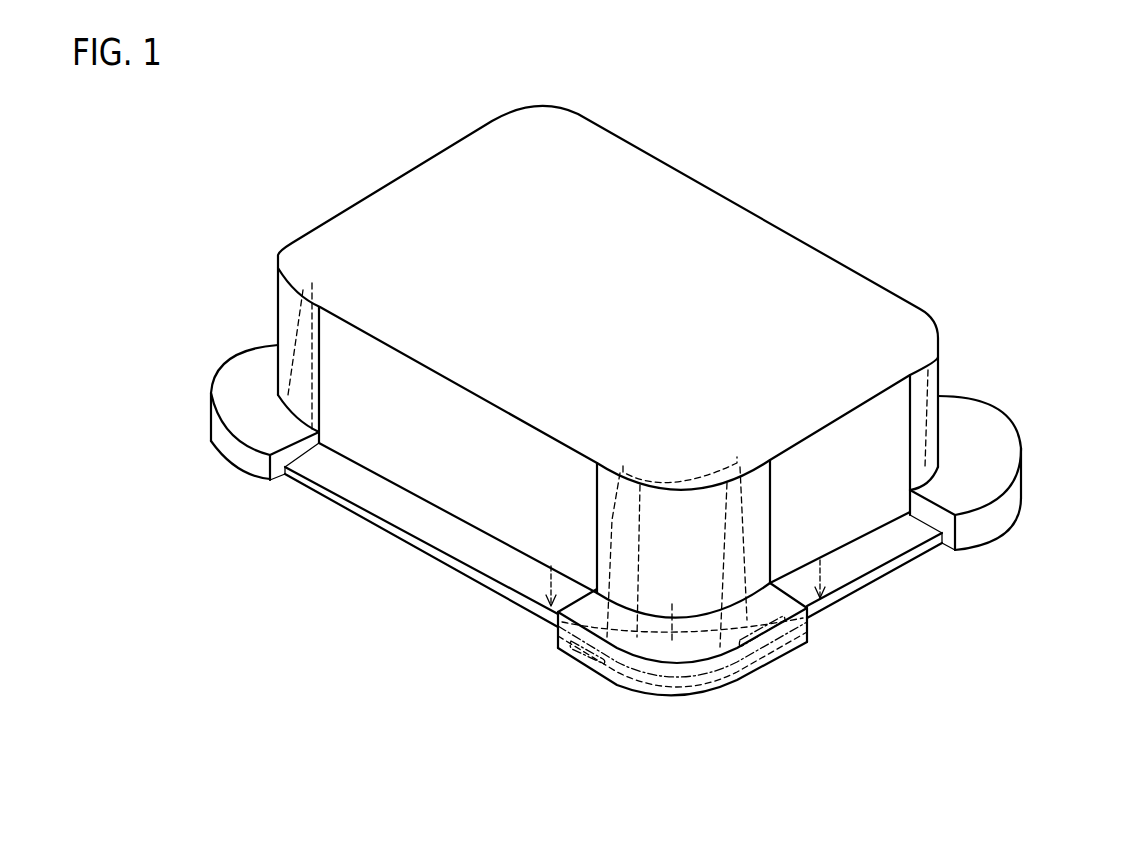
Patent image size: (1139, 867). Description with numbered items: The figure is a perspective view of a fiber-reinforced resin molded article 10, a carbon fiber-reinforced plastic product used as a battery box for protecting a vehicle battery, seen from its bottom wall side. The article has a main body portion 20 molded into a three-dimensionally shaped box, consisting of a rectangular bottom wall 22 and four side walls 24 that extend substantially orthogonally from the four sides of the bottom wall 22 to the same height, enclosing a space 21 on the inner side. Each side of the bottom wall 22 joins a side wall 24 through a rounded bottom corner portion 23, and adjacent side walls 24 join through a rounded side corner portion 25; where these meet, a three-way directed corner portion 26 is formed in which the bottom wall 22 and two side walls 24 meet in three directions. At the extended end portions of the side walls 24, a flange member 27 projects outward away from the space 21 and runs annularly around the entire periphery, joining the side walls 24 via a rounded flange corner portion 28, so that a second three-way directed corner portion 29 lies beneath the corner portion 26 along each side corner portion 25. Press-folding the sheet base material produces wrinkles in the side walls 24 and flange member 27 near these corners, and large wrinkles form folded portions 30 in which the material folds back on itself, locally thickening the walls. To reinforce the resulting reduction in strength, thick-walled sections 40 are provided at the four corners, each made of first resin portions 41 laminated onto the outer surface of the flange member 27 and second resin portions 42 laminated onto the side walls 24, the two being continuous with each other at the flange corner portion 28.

The fiber-reinforced resin molded article 10 is at (250, 128).
The main body portion 20 is at (706, 174).
The space 21 is at (710, 248).
The bottom wall 22 is at (633, 190).
The bottom corner portion 23 is at (808, 246).
The side wall 24 is at (437, 490).
The side corner portion 25 is at (278, 310).
The three-way directed corner portion 26 is at (283, 247).
The flange member 27 is at (318, 487).
The flange corner portion 28 is at (505, 553).
The three-way directed corner portion 29 is at (672, 640).
The folded portion 30 is at (322, 333).
The thick-walled section 40 is at (225, 466).
The first resin portion 41 is at (610, 660).
The second resin portion 42 is at (670, 547).